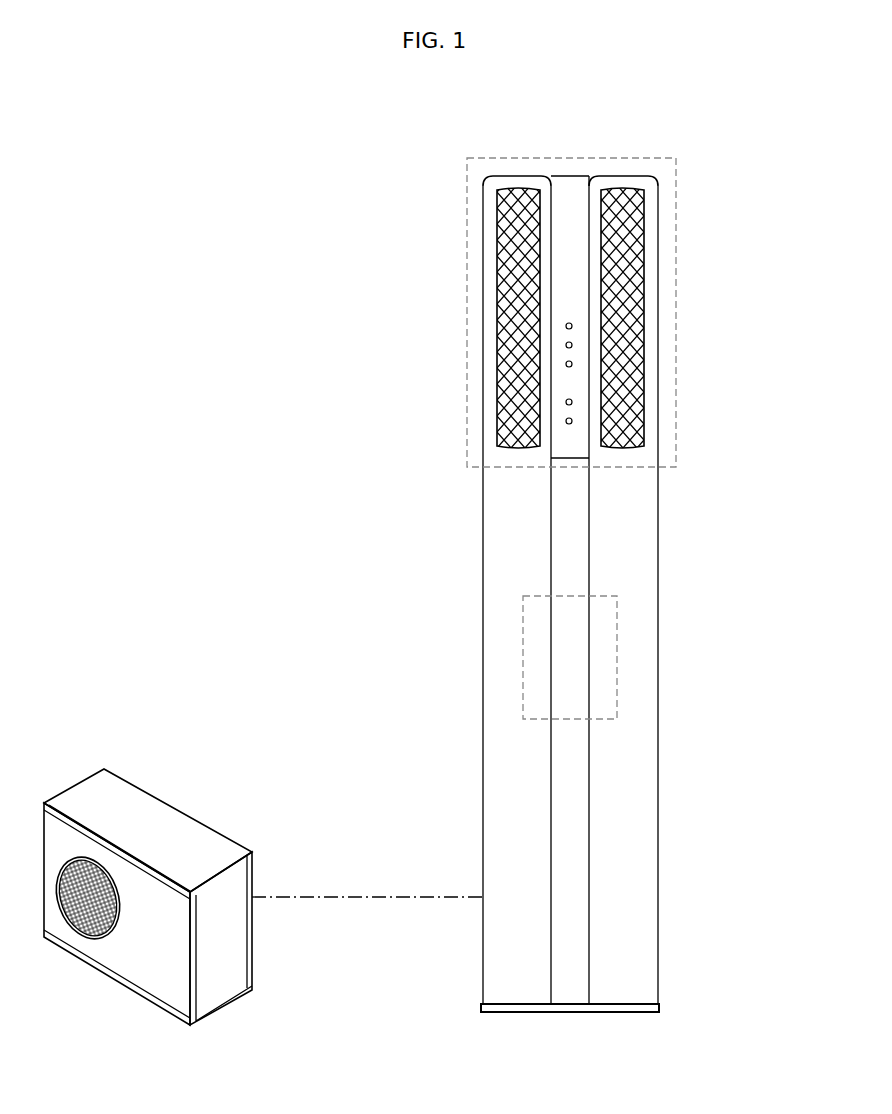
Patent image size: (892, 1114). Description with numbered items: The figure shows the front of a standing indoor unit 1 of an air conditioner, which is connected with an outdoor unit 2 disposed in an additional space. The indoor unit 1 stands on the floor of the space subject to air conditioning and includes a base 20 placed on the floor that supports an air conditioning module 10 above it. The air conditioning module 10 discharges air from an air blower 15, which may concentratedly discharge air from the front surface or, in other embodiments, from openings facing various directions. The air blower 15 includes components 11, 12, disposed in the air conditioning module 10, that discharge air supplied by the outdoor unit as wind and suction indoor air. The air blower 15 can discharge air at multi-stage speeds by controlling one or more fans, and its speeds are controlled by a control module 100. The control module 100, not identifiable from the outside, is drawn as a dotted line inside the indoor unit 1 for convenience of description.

The indoor unit 1 is at (802, 310).
The outdoor unit 2 is at (145, 823).
The air conditioning module 10 is at (745, 157).
The air blower component 11 is at (644, 352).
The air blower component 12 is at (498, 352).
The air blower 15 is at (571, 158).
The base 20 is at (745, 1005).
The control module 100 is at (523, 651).